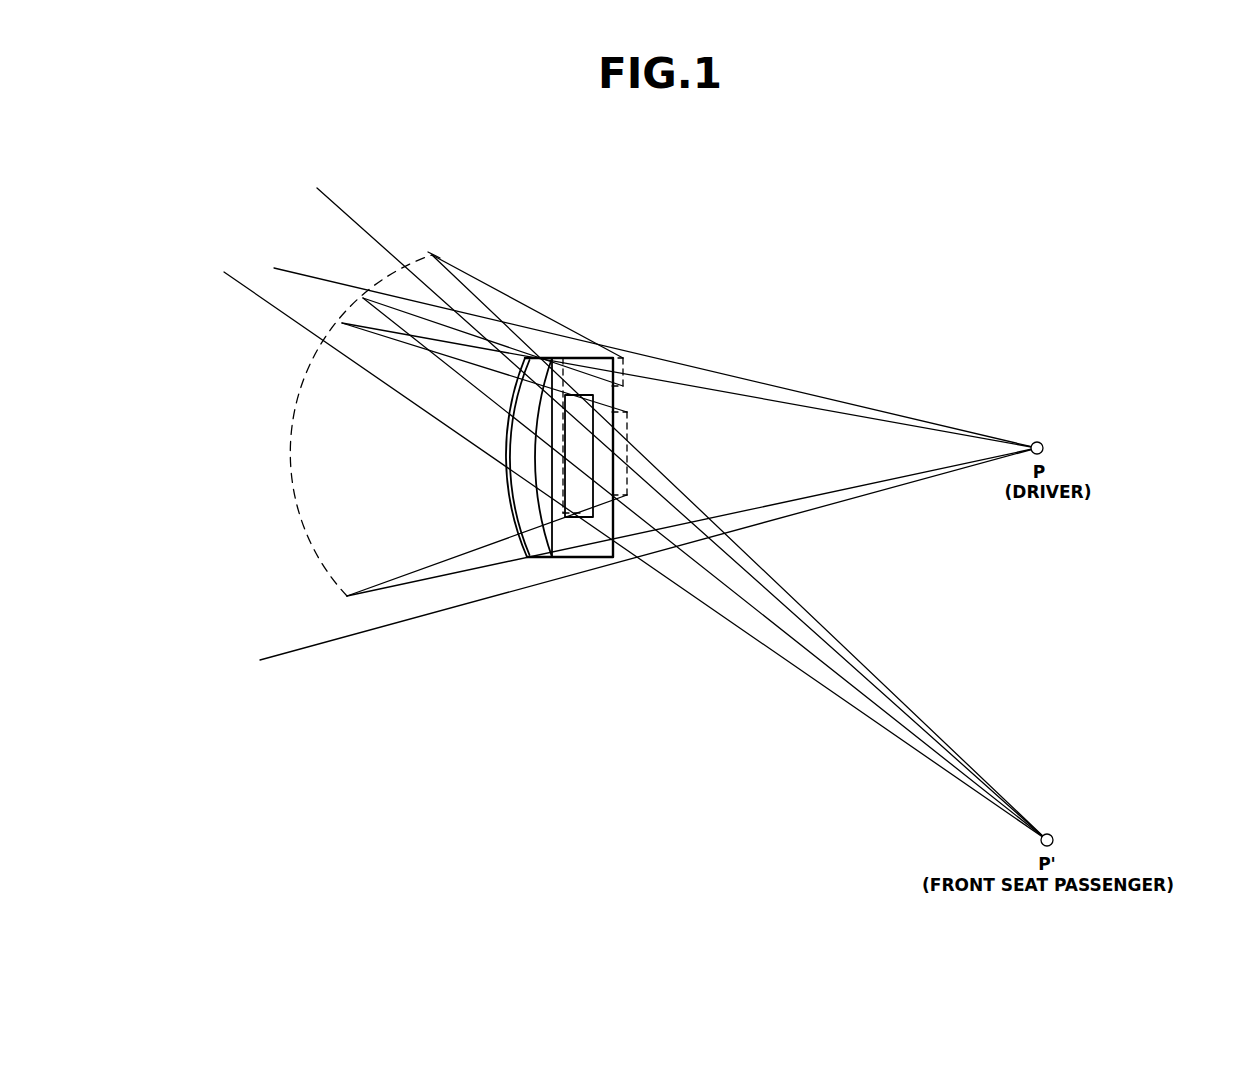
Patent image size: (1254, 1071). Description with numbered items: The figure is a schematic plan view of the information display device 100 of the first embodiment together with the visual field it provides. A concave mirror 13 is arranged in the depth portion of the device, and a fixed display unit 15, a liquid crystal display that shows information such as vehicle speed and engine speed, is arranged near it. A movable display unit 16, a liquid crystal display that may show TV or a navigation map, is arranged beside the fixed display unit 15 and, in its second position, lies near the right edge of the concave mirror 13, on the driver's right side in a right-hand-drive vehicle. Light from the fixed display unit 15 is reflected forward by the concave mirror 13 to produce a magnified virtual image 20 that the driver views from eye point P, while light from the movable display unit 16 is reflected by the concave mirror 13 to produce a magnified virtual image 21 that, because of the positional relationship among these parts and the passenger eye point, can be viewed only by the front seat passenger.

The information display device 100 is at (719, 169).
The concave mirror 13 is at (535, 503).
The fixed display unit 15 is at (614, 452).
The movable display unit 16 is at (584, 352).
The magnified virtual image 20 is at (292, 492).
The magnified virtual image 21 is at (425, 253).